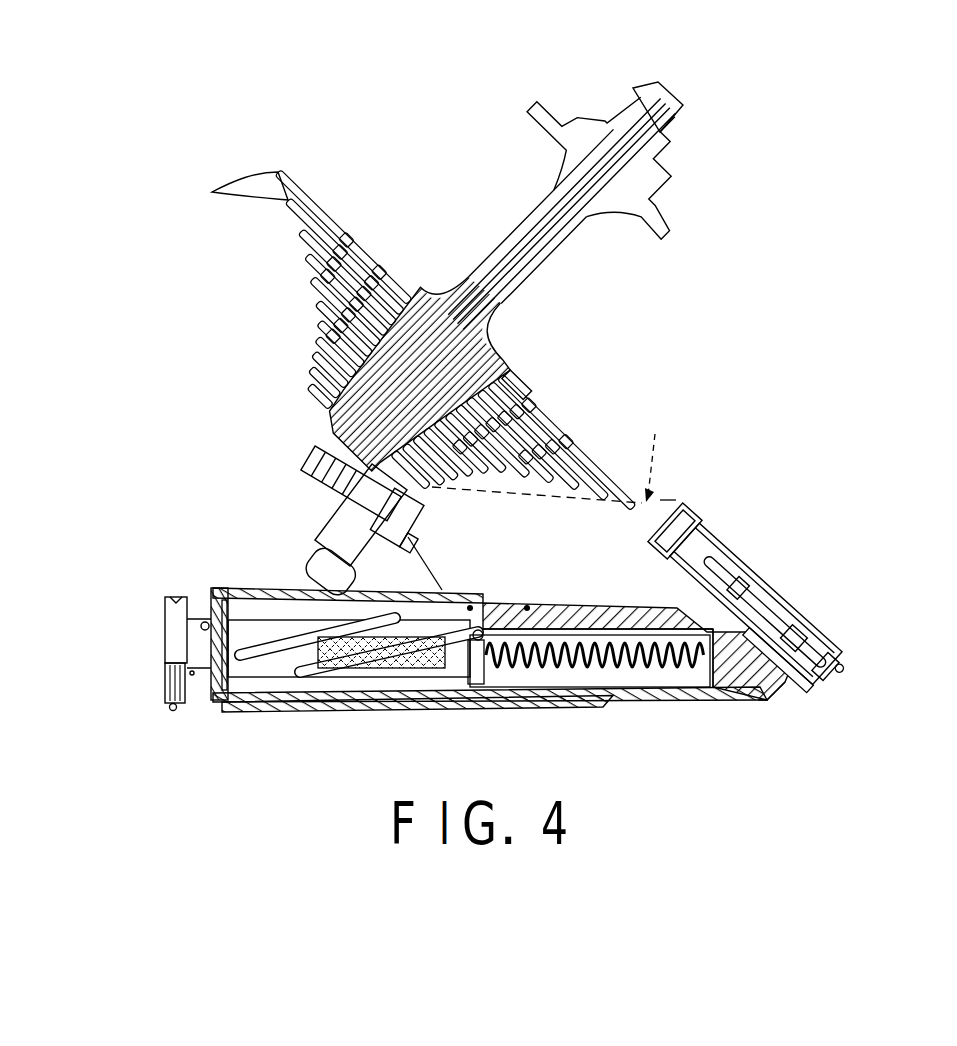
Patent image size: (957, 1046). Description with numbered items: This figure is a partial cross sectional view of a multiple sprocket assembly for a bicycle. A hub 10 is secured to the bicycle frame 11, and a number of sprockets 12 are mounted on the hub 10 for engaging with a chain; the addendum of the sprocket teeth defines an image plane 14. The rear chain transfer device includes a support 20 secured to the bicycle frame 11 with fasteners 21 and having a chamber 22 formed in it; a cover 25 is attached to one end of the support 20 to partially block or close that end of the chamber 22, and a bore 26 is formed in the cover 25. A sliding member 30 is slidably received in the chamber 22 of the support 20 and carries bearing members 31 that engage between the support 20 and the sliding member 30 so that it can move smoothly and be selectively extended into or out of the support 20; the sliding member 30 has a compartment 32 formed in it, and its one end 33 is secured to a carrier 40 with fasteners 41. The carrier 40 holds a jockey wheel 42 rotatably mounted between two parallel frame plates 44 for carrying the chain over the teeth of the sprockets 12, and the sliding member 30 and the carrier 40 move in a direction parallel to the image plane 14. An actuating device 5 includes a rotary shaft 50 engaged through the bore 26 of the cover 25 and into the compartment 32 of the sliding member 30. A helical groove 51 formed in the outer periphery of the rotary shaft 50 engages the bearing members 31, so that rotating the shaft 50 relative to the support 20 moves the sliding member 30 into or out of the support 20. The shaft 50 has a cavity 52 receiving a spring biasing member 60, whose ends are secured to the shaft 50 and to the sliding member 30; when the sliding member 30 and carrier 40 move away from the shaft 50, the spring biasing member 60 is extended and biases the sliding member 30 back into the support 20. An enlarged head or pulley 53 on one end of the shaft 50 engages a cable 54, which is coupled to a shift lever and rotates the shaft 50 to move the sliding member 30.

The actuating device 5 is at (128, 608).
The hub 10 is at (626, 85).
The bicycle frame 11 is at (310, 452).
The sprockets 12 is at (299, 288).
The image plane 14 is at (554, 449).
The support 20 is at (440, 712).
The fasteners 21 is at (318, 574).
The chamber 22 is at (452, 602).
The cover 25 is at (221, 588).
The bore 26 is at (205, 690).
The sliding member 30 is at (730, 700).
The bearing members 31 is at (527, 606).
The compartment 32 is at (610, 628).
The one end 33 is at (760, 706).
The carrier 40 is at (783, 605).
The fasteners 41 is at (792, 697).
The jockey wheel 42 is at (764, 612).
The frame plates 44 is at (839, 668).
The rotary shaft 50 is at (249, 678).
The helical groove 51 is at (302, 670).
The cavity 52 is at (366, 712).
The pulley 53 is at (162, 687).
The cable 54 is at (172, 710).
The spring biasing member 60 is at (648, 683).